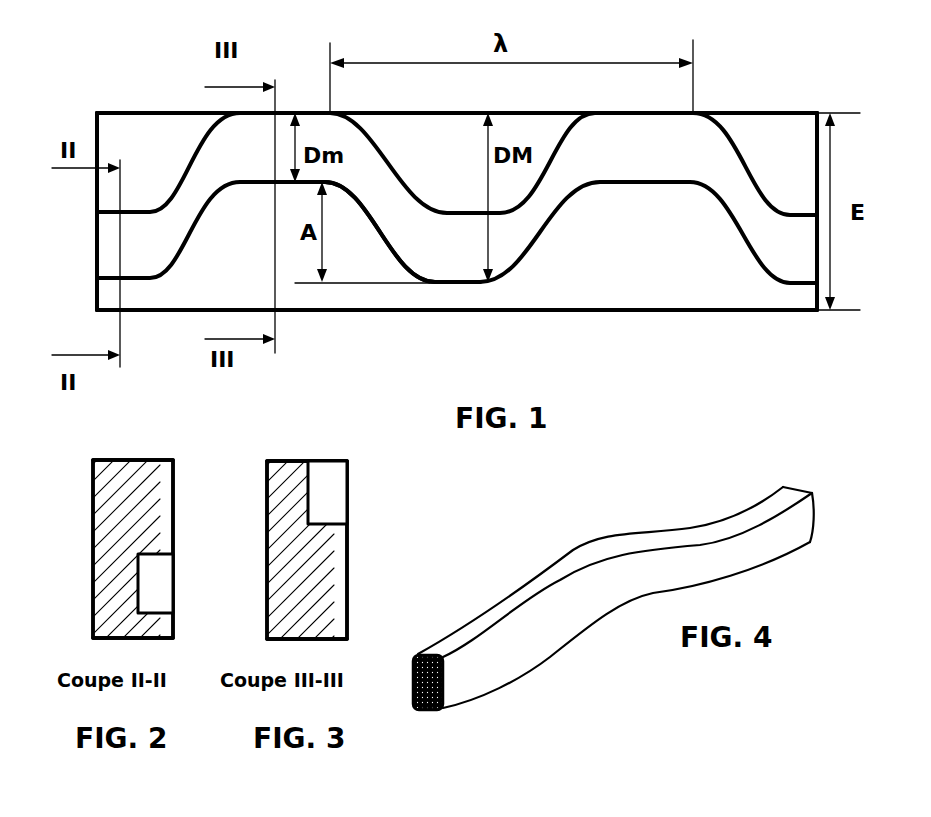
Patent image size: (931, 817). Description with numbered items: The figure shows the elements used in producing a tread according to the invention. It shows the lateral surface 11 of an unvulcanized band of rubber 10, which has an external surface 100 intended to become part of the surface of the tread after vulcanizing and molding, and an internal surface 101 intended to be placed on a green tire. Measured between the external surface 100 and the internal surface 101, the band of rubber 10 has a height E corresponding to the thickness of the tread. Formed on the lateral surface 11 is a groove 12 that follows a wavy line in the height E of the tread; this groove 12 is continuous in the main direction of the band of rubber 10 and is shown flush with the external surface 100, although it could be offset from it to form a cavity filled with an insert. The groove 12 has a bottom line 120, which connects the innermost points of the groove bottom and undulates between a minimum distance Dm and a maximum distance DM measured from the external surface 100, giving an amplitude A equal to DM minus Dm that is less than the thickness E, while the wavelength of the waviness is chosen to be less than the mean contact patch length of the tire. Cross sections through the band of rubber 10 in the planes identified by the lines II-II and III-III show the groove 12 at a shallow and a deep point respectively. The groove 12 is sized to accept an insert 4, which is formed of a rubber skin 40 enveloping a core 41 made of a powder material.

In FIG. 1, the band of rubber 10 is at (735, 77).
In FIG. 2, the band of rubber 10 is at (108, 530).
In FIG. 3, the band of rubber 10 is at (330, 560).
In FIG. 1, the external surface 100 is at (757, 113).
In FIG. 2, the external surface 100 is at (132, 459).
In FIG. 3, the external surface 100 is at (307, 459).
In FIG. 1, the internal surface 101 is at (718, 313).
In FIG. 2, the internal surface 101 is at (131, 639).
In FIG. 3, the internal surface 101 is at (276, 641).
In FIG. 1, the lateral surface 11 is at (457, 211).
In FIG. 2, the lateral surface 11 is at (174, 506).
In FIG. 3, the lateral surface 11 is at (351, 600).
In FIG. 1, the groove 12 is at (643, 157).
In FIG. 2, the groove 12 is at (152, 592).
In FIG. 3, the groove 12 is at (330, 492).
In FIG. 1, the bottom line 120 is at (407, 266).
In FIG. 4, the insert 4 is at (532, 634).
In FIG. 4, the rubber skin 40 is at (443, 688).
In FIG. 4, the core 41 is at (420, 710).